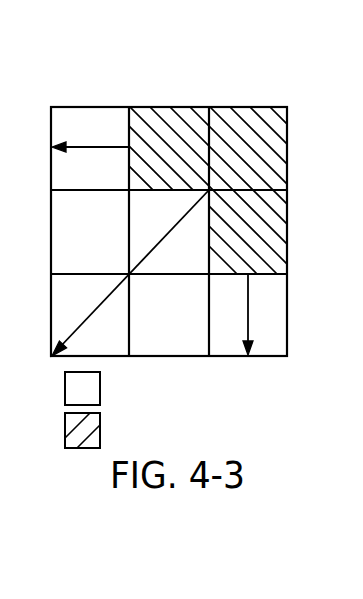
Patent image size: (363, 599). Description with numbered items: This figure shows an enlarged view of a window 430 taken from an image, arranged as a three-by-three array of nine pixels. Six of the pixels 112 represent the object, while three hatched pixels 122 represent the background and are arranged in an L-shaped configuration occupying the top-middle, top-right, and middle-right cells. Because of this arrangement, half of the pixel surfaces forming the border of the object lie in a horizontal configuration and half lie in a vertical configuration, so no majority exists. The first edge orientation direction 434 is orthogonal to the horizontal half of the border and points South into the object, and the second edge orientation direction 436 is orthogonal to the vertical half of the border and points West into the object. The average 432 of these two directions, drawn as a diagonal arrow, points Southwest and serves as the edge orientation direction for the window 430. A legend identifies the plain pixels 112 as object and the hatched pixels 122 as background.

The window 430 is at (234, 101).
The average edge orientation direction 432 is at (103, 297).
The first edge orientation direction 434 is at (248, 317).
The second edge orientation direction 436 is at (93, 147).
The pixels representing the object 112 is at (141, 388).
The pixels representing the background 122 is at (168, 430).